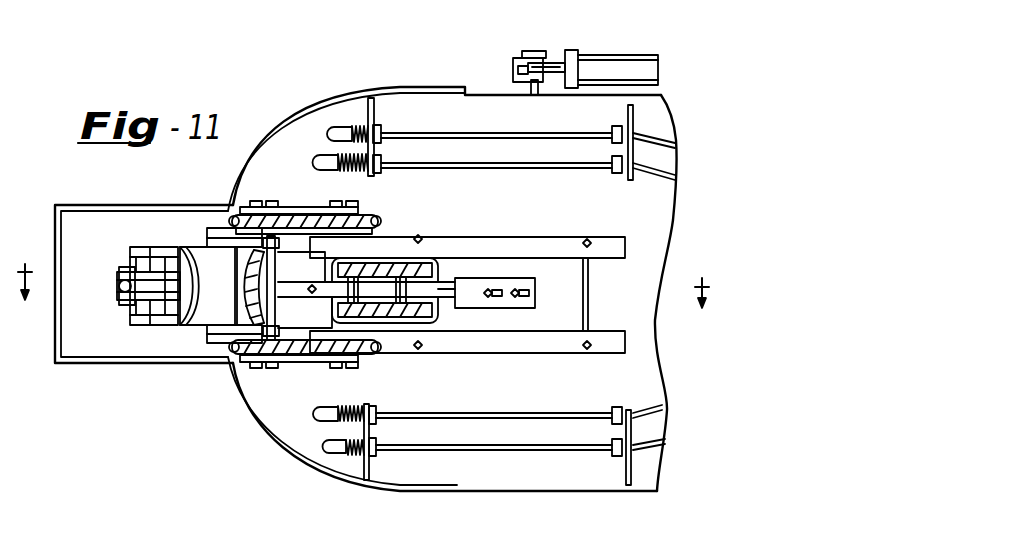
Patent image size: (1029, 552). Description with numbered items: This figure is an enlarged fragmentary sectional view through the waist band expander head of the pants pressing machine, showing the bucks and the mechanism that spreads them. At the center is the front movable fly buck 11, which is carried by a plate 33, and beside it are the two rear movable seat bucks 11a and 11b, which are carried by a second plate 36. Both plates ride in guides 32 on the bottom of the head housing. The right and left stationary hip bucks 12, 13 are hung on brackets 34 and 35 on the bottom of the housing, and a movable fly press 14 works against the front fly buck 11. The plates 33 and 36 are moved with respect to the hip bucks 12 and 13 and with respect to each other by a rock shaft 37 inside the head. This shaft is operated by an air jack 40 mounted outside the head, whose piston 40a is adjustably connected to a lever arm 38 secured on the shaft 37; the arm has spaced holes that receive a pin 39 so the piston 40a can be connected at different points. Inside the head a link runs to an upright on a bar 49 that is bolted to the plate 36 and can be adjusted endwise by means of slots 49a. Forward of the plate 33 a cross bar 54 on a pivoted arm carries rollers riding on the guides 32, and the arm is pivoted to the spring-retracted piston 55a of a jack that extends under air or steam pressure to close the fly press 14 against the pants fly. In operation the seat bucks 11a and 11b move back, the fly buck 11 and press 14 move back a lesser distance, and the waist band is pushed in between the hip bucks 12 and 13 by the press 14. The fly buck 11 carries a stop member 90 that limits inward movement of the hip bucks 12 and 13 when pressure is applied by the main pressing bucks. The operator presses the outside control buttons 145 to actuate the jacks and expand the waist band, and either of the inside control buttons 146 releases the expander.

The front movable fly buck 11 is at (251, 256).
The rear movable seat buck 11a is at (420, 262).
The rear movable seat buck 11b is at (425, 325).
The right stationary hip buck 12 is at (371, 218).
The left stationary hip buck 13 is at (380, 378).
The movable fly press 14 is at (133, 318).
The guides 32 is at (553, 240).
The plate 33 is at (314, 275).
The bracket 34 is at (301, 364).
The bracket 35 is at (289, 210).
The second plate 36 is at (560, 303).
The rock shaft 37 is at (528, 88).
The lever arm 38 is at (513, 68).
The pin 39 is at (539, 56).
The air jack 40 is at (625, 58).
The piston 40a is at (555, 63).
The bar 49 is at (490, 288).
The slots 49a is at (516, 297).
The cross bar 54 is at (130, 276).
The piston 55a is at (116, 287).
The stop member 90 is at (277, 262).
The outside control buttons 145 is at (337, 130).
The inside control buttons 146 is at (318, 163).